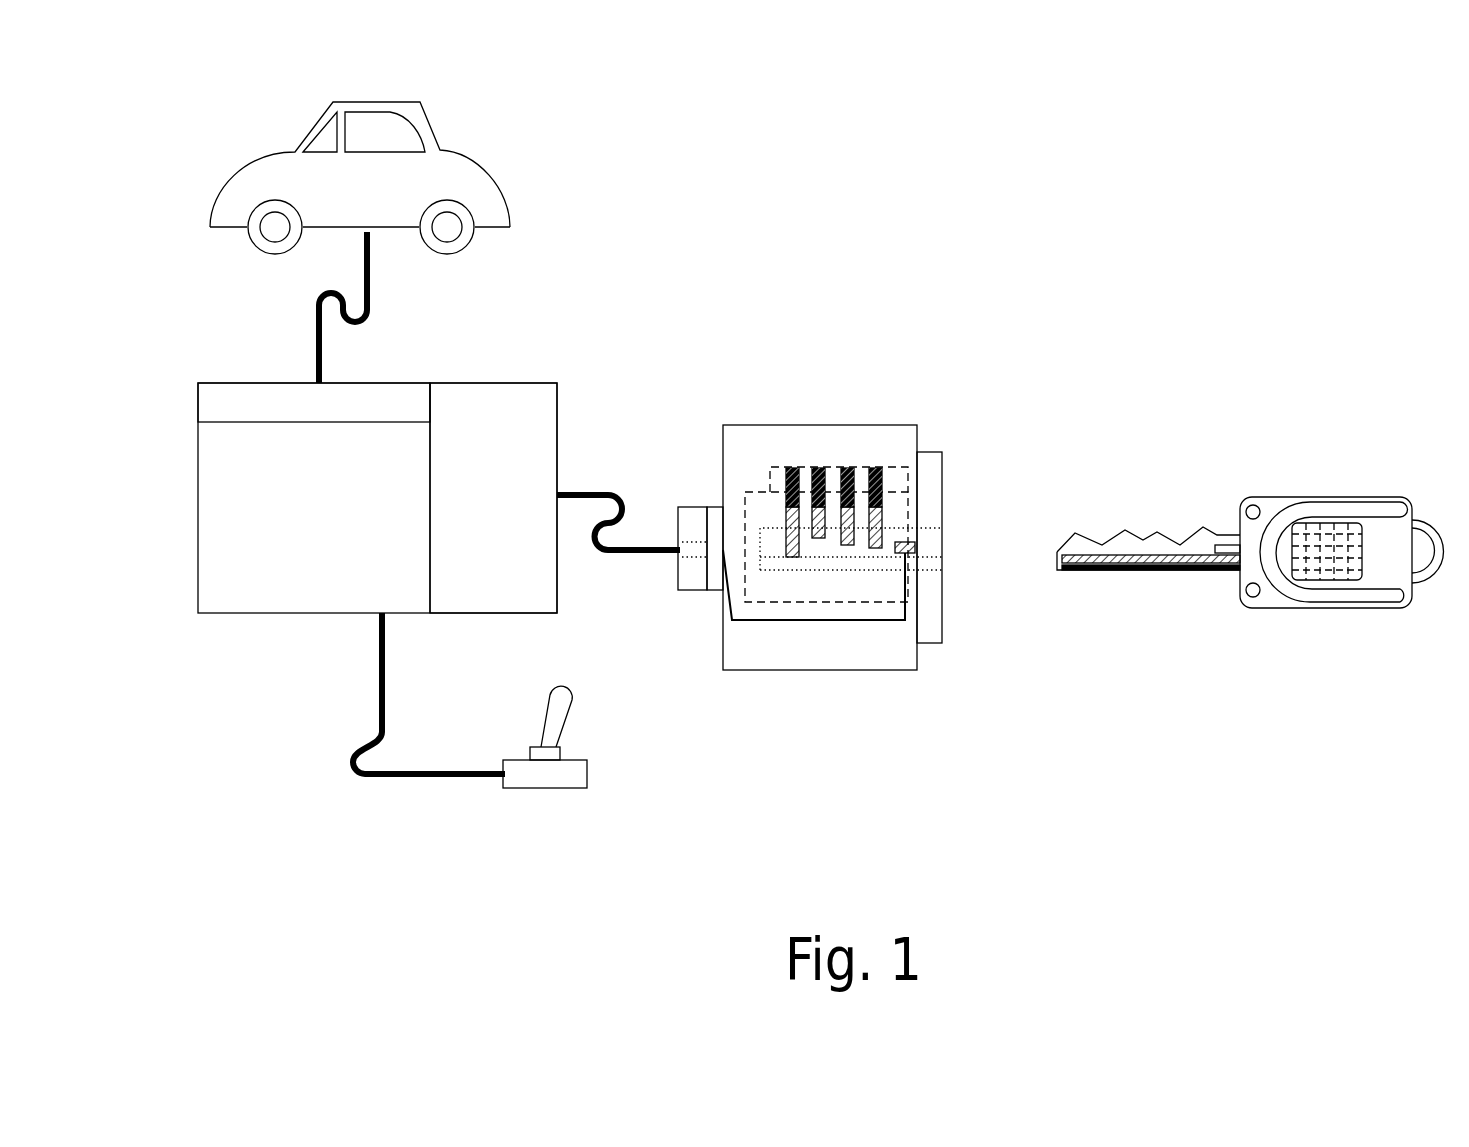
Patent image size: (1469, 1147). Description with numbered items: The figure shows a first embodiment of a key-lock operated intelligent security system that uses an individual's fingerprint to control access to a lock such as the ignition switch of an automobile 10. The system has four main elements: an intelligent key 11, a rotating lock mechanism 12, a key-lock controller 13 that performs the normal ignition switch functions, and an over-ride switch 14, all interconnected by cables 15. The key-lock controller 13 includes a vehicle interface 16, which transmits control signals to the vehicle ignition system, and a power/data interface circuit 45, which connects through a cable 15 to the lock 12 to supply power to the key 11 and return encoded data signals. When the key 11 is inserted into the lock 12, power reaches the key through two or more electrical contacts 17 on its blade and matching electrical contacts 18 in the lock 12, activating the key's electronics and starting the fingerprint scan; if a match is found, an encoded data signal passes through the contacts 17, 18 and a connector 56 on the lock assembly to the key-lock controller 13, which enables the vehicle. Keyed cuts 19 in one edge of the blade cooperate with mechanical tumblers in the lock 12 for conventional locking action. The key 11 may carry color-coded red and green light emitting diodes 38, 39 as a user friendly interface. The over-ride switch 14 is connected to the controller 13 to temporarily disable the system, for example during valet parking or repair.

The automobile 10 is at (430, 175).
The intelligent key 11 is at (1383, 528).
The rotating lock mechanism 12 is at (903, 435).
The key-lock controller 13 is at (237, 597).
The over-ride switch 14 is at (593, 770).
The cables 15 is at (360, 247).
The vehicle interface 16 is at (417, 400).
The electrical contacts 17 is at (1225, 552).
The electrical contacts 18 is at (913, 548).
The keyed cuts 19 is at (1185, 535).
The red light emitting diode 38 is at (1253, 505).
The green light emitting diode 39 is at (1255, 597).
The power/data interface circuit 45 is at (530, 470).
The connector 56 is at (688, 575).